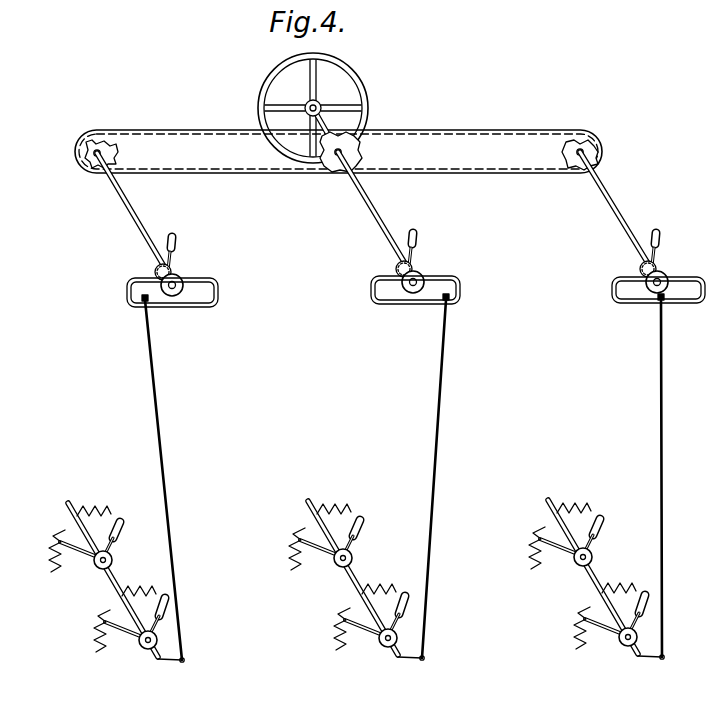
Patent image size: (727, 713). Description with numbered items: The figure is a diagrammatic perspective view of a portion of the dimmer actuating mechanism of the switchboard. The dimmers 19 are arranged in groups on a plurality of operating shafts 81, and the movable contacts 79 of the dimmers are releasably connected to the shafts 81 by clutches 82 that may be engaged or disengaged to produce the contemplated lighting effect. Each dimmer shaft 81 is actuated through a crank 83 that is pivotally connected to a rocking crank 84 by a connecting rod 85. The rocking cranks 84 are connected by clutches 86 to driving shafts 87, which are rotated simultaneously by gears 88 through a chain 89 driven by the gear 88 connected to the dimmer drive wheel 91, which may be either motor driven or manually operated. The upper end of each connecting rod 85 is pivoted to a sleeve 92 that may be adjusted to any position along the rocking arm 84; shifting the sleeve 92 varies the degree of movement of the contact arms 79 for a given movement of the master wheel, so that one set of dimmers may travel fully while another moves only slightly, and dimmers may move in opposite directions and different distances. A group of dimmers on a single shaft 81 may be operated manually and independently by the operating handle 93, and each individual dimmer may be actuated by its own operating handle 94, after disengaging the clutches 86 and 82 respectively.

The dimmer 19 is at (52, 551).
The movable contact 79 is at (79, 552).
The operating shaft 81 is at (120, 580).
The clutch 82 is at (101, 570).
The crank 83 is at (182, 663).
The rocking crank 84 is at (186, 307).
The connecting rod 85 is at (164, 470).
The clutch 86 is at (176, 276).
The driving shaft 87 is at (131, 212).
The gear 88 is at (112, 150).
The chain 89 is at (441, 131).
The dimmer drive wheel 91 is at (362, 106).
The sleeve 92 is at (141, 302).
The operating handle 93 is at (177, 236).
The operating handle 94 is at (122, 526).